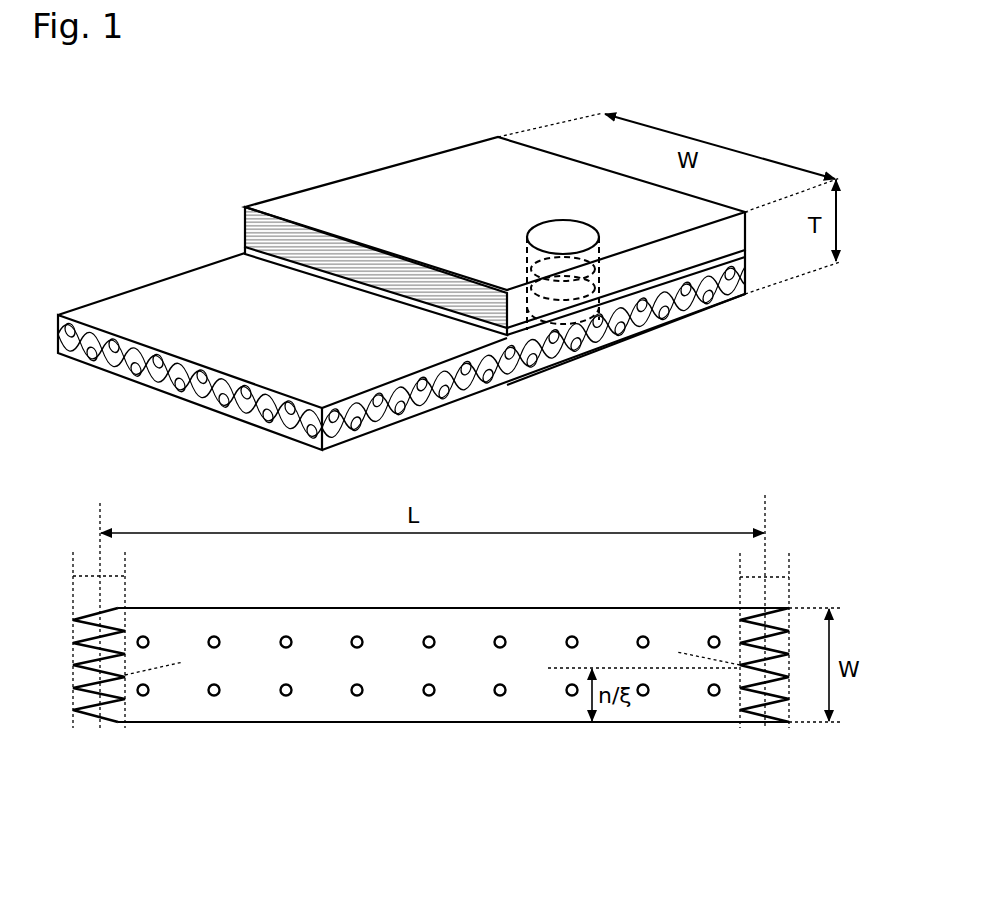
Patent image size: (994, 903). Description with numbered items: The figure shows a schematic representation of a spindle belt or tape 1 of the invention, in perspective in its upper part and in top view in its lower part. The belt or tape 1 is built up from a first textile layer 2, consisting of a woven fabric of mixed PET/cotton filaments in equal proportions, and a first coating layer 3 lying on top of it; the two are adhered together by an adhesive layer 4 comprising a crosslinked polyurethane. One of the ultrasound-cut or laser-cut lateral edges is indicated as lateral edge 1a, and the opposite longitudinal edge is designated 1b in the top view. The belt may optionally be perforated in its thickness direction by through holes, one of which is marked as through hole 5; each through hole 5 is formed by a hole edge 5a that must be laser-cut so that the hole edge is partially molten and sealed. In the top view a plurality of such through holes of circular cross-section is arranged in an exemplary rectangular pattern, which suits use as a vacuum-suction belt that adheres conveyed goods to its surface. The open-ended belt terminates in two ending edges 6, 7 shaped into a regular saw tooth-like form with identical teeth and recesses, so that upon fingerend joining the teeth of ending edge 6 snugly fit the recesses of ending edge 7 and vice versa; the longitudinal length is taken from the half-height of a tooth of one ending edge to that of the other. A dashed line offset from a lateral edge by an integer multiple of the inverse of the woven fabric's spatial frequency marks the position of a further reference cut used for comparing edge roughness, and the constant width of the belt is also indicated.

The belt or tape 1 is at (198, 223).
The lateral edge 1a is at (705, 302).
The second longitudinal side face 1b is at (448, 606).
The first textile layer 2 is at (510, 386).
The first coating layer 3 is at (372, 207).
The adhesive layer 4 is at (600, 303).
The through hole 5 is at (560, 237).
The hole edge 5a is at (577, 238).
The ending edge 6 is at (95, 613).
The ending edge 7 is at (748, 617).